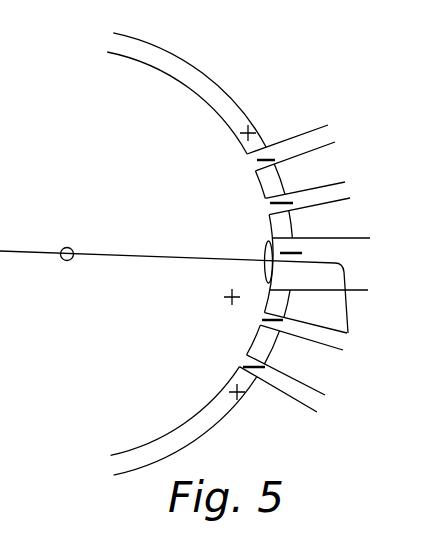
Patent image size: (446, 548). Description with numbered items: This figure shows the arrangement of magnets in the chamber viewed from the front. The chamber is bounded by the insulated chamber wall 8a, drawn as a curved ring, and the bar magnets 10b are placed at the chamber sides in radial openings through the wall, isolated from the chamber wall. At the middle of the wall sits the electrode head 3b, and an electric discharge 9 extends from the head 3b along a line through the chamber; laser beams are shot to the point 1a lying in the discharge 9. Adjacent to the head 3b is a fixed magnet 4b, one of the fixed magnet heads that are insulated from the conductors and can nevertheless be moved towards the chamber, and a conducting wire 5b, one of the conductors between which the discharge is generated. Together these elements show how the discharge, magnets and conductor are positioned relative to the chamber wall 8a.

The chamber wall 8a is at (177, 253).
The laser target point 1a is at (65, 238).
The electric discharge 9 is at (167, 247).
The electrode head 3b is at (268, 261).
The fixed magnet 4b is at (332, 264).
The conducting wire 5b is at (361, 299).
The bar magnets 10b is at (321, 273).